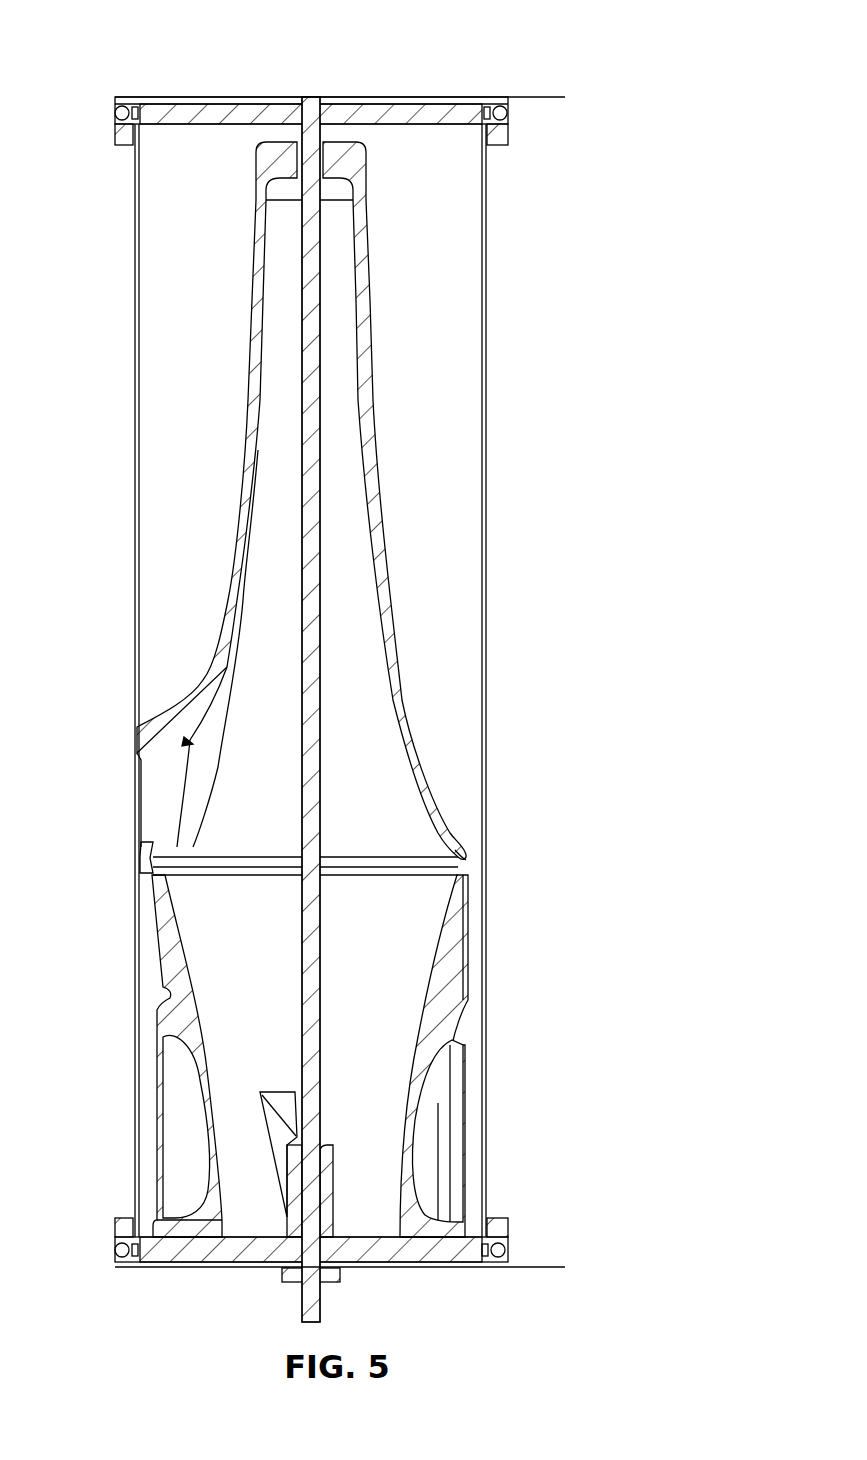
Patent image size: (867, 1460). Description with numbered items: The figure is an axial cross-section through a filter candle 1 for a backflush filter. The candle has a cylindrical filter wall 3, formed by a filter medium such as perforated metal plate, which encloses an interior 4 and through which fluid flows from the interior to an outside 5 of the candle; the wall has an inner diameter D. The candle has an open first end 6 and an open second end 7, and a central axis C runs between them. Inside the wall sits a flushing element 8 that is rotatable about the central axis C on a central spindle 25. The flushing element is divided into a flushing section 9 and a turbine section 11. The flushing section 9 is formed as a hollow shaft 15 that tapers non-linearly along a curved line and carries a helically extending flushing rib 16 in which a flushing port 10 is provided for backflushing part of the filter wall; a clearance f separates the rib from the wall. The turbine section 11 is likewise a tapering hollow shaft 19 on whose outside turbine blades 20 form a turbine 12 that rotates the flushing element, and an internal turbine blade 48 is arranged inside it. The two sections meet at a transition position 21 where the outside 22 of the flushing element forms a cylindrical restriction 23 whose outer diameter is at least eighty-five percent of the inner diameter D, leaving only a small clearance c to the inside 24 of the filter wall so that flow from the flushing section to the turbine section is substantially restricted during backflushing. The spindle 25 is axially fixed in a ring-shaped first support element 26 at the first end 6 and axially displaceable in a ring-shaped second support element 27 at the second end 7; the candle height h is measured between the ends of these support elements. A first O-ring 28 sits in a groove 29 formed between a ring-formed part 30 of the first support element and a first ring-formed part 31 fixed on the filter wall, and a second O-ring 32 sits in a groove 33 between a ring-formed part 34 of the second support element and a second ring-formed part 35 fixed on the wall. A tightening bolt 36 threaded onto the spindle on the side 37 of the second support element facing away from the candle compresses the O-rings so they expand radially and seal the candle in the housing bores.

The filter candle 1 is at (98, 693).
The cylindrical filter wall 3 is at (137, 430).
The interior of filter candle 4 is at (157, 355).
The outside of filter candle 5 is at (74, 184).
The first end of filter candle 6 is at (98, 128).
The second end of filter candle 7 is at (98, 1248).
The flushing element 8 is at (405, 660).
The flushing section of flushing element 9 is at (445, 447).
The flushing port of flushing section 10 is at (165, 780).
The turbine section of flushing element 11 is at (460, 1058).
The turbine of turbine section 12 is at (447, 1160).
The hollow shaft forming flushing section 15 is at (362, 320).
The flushing rib arranged on hollow shaft 16 is at (163, 723).
The hollow shaft forming turbine section 19 is at (413, 1118).
The turbine blade of turbine section 20 is at (172, 1143).
The transition position between flushing section and turbine section 21 is at (468, 862).
The outside of flushing element 22 is at (465, 857).
The cylindrical restriction formed on outside of flushing element 23 is at (462, 872).
The inside of cylindrical filter wall 24 is at (480, 712).
The central spindle of filter candle 25 is at (308, 266).
The first support element 26 is at (443, 112).
The second support element 27 is at (208, 1250).
The first O-ring 28 is at (498, 110).
The groove 29 is at (115, 112).
The ring-formed part of first support element 30 is at (125, 107).
The first ring-formed part fixed on cylindrical filter wall 31 is at (127, 140).
The second O-ring 32 is at (115, 1252).
The groove 33 is at (498, 1258).
The ring-formed part of second support element 34 is at (483, 1267).
The second ring-formed part fixed on cylindrical filter wall 35 is at (497, 1222).
The tightening bolt 36 is at (342, 1277).
The side of second support element facing away from filter candle 37 is at (262, 1274).
The internal turbine blade of turbine section 48 is at (283, 1107).
The inner diameter of cylindrical filter wall D is at (140, 97).
The central axis of filter candle C is at (312, 97).
The height of filter candle between ends of support elements h is at (558, 97).
The clearance between cylindrical restriction and inside of filter wall c is at (410, 868).
The clearance between flushing rib and inside of filter wall f is at (167, 792).